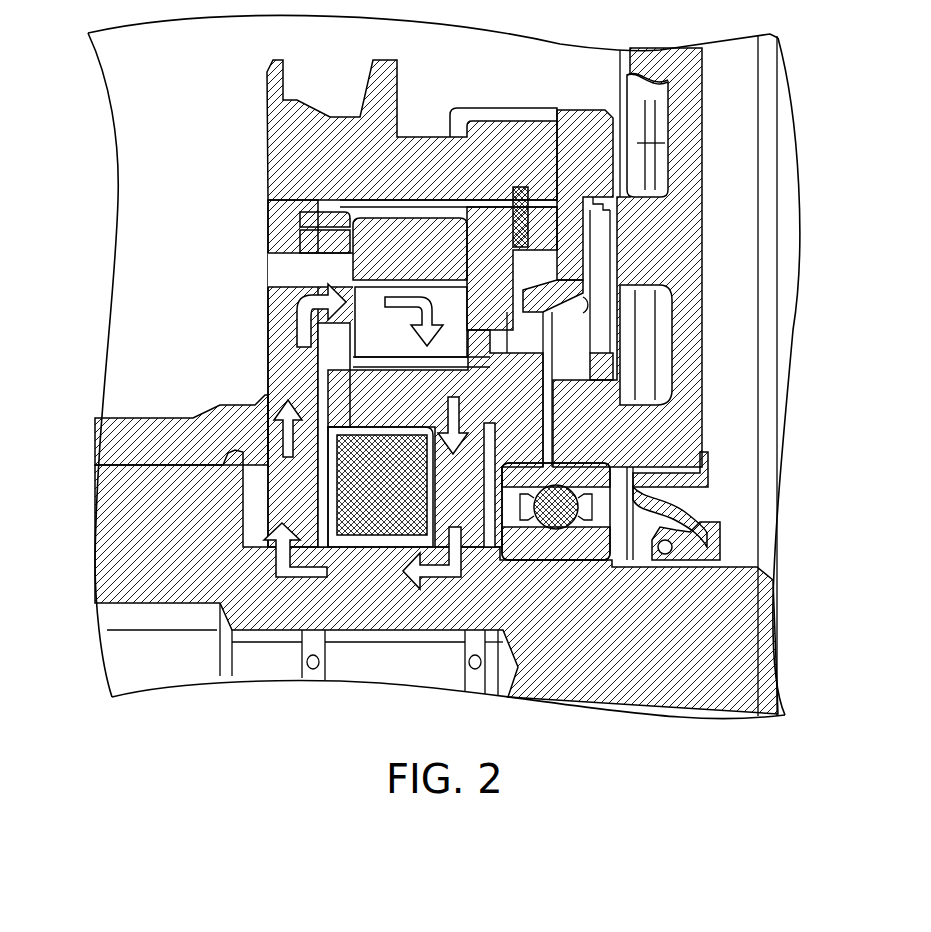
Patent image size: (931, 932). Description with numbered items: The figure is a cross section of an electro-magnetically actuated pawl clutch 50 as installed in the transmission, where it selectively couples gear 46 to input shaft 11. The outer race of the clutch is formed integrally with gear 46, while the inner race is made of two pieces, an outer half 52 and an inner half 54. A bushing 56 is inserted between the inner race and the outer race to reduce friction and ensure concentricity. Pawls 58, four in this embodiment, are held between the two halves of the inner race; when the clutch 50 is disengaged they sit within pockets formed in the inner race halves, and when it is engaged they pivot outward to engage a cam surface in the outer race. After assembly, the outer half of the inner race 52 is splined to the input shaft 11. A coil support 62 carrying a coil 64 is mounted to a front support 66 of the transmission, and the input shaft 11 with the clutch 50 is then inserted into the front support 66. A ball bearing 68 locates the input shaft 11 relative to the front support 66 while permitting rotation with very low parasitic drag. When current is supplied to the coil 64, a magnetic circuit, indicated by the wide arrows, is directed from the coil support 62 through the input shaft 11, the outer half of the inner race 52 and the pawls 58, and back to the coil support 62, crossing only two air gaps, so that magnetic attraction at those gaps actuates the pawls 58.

The input shaft 11 is at (745, 560).
The gear 46 is at (267, 123).
The clutch 50 is at (138, 383).
The outer half of the inner race 52 is at (267, 350).
The inner half of the inner race 54 is at (483, 207).
The bushing 56 is at (298, 218).
The pawls 58 is at (372, 203).
The coil support 62 is at (477, 470).
The coil 64 is at (325, 500).
The front support 66 is at (702, 192).
The ball bearing 68 is at (630, 433).